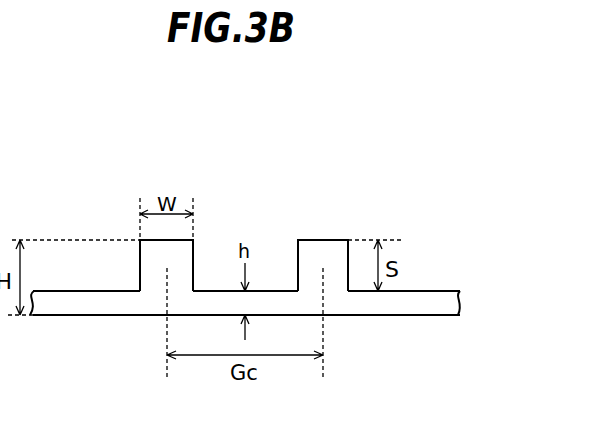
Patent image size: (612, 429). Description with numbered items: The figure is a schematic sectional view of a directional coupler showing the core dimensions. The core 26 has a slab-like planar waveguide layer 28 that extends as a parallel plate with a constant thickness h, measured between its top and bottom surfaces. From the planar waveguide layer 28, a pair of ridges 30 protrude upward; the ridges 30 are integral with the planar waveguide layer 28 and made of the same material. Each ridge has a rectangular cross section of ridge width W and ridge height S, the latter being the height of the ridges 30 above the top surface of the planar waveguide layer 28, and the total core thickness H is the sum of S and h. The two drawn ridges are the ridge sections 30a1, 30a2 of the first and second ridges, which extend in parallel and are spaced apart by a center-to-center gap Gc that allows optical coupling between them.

The core 26 is at (245, 200).
The planar waveguide layer 28 is at (432, 297).
The ridges 30 is at (245, 209).
The ridge section 30a1 is at (183, 264).
The ridge section 30a2 is at (321, 252).